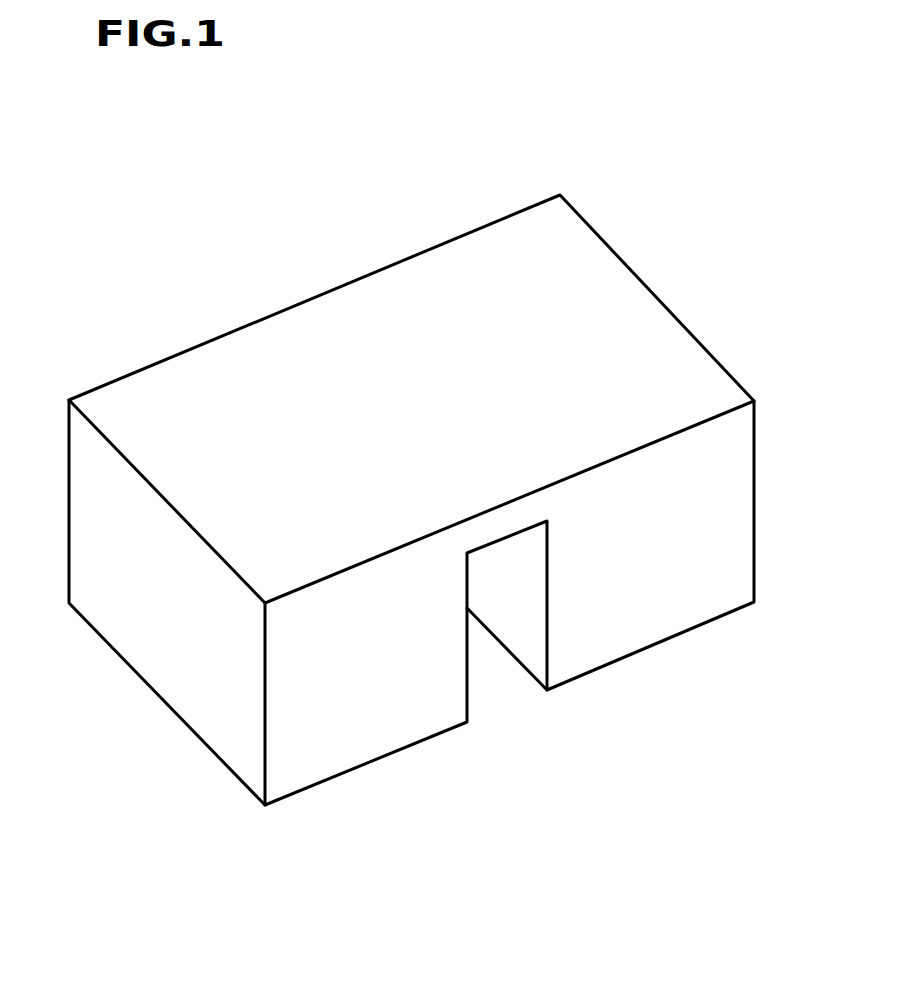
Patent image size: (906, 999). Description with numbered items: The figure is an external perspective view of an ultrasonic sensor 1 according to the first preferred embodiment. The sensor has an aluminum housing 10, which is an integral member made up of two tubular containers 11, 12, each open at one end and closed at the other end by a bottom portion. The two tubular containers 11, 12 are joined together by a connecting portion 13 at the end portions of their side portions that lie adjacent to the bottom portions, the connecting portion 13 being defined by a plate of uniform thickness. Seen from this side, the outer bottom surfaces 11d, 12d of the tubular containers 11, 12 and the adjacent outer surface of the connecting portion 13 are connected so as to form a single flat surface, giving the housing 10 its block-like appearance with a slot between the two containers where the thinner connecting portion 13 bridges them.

The ultrasonic sensor 1 is at (50, 165).
The housing 10 is at (633, 237).
The tubular container 11 is at (654, 570).
The outer bottom surface 11d is at (547, 339).
The tubular container 12 is at (358, 692).
The outer bottom surface 12d is at (271, 442).
The connecting portion 13 is at (492, 521).